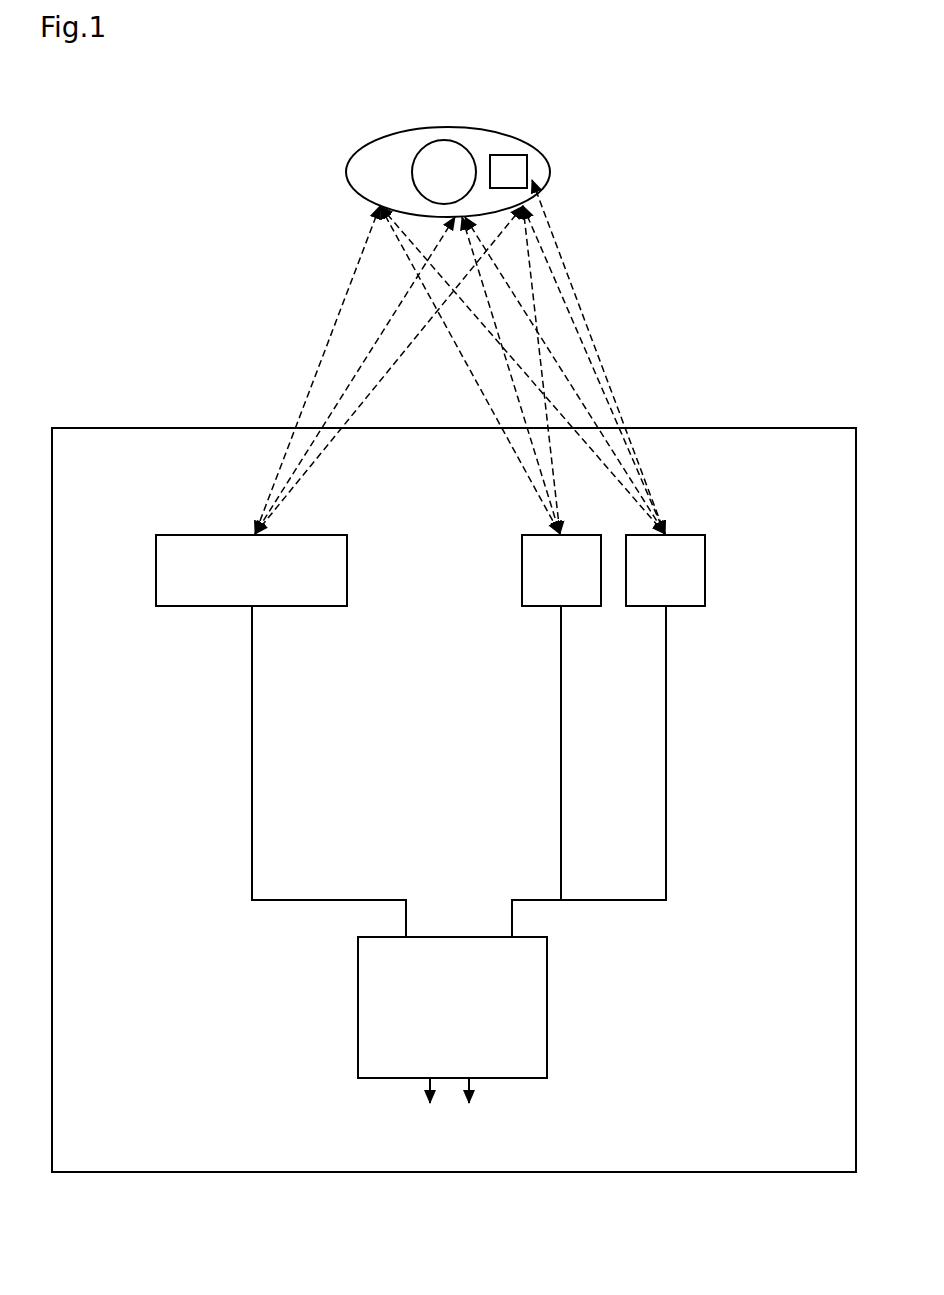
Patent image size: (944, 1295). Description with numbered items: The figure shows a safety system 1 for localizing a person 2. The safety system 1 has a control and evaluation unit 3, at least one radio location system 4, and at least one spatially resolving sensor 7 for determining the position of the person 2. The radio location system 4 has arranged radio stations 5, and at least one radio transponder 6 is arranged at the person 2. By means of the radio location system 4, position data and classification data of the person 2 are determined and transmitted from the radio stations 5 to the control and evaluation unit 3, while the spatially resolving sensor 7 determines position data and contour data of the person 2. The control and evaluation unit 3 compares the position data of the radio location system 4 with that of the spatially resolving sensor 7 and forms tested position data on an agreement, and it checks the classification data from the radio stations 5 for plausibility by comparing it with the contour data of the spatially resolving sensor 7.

The safety system 1 is at (715, 117).
The person 2 is at (395, 152).
The control and evaluation unit 3 is at (547, 1053).
The radio location system 4 is at (627, 273).
The radio stations 5 is at (537, 607).
The radio transponder 6 is at (513, 162).
The spatially resolving sensor 7 is at (312, 607).